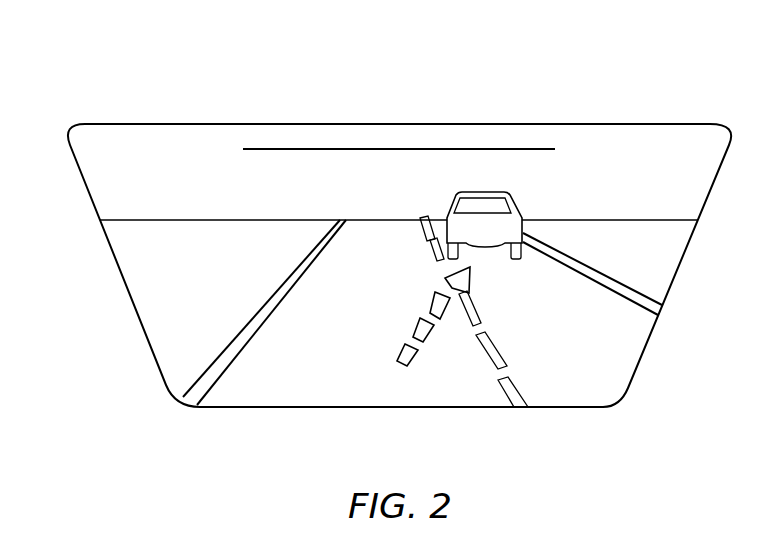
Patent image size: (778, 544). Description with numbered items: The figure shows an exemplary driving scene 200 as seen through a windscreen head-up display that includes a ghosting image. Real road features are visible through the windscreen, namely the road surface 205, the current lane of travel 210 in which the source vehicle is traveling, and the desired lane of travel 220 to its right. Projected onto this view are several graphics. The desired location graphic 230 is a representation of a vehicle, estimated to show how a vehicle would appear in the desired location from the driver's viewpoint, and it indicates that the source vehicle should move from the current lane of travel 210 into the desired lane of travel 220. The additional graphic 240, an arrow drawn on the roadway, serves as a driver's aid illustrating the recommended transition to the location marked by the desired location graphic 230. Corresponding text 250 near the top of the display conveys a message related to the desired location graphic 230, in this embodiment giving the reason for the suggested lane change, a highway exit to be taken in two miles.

The driving scene 200 is at (141, 106).
The road surface 205 is at (336, 308).
The current lane of travel 210 is at (320, 387).
The desired lane of travel 220 is at (603, 363).
The desired location graphic 230 is at (522, 211).
The additional graphic 240 is at (432, 335).
The corresponding text 250 is at (395, 148).